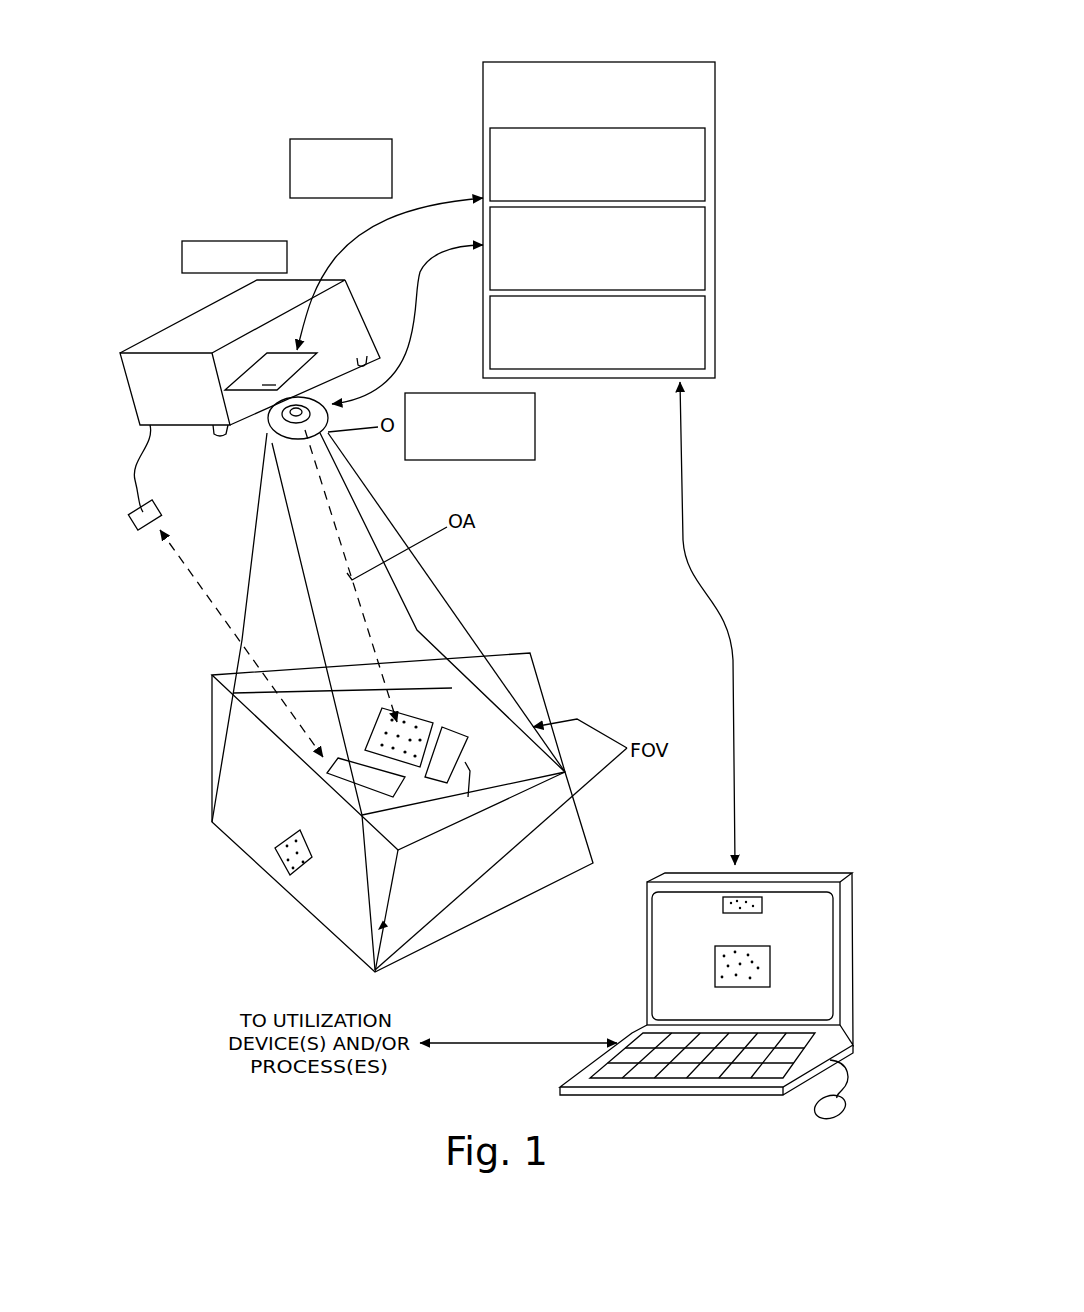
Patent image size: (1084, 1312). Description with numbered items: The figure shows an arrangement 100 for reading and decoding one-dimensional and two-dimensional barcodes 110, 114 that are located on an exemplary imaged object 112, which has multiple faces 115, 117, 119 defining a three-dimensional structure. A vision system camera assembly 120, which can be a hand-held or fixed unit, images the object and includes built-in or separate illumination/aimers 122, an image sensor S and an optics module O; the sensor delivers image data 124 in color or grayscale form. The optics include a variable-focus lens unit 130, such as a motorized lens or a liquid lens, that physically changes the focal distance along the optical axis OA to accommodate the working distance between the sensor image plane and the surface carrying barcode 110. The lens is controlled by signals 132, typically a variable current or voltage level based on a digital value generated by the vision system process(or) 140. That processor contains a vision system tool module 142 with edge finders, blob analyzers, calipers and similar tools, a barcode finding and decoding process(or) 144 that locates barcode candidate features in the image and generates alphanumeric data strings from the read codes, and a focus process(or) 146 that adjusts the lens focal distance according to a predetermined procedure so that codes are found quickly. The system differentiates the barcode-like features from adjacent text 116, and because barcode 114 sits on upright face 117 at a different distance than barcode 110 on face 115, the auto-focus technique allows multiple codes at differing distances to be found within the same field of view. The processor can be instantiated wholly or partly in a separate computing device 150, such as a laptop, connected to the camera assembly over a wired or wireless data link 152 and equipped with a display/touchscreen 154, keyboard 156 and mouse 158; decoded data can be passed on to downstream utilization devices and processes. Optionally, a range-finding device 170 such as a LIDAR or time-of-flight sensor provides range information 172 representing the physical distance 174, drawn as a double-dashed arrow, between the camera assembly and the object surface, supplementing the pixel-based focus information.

The arrangement 100 is at (256, 147).
The barcode 110 is at (432, 710).
The object 112 is at (551, 707).
The barcode 114 is at (290, 861).
The object face 115 is at (535, 677).
The text 116 is at (397, 792).
The upright face 117 is at (213, 776).
The face 119 is at (563, 845).
The vision system camera assembly 120 is at (127, 379).
The illumination/aimers 122 is at (374, 352).
The image data 124 is at (357, 142).
The variable-focus lens unit 130 is at (262, 437).
The signals 132 is at (537, 429).
The vision system process(or) 140 is at (676, 58).
The vision system tool module 142 is at (705, 147).
The barcode finding and decoding process(or) 144 is at (705, 238).
The focus process(or) 146 is at (705, 333).
The computing device 150 is at (737, 979).
The data link 152 is at (727, 596).
The display/touchscreen 154 is at (817, 943).
The keyboard 156 is at (783, 1052).
The mouse 158 is at (847, 1110).
The range-finding device 170 is at (135, 524).
The range information 172 is at (182, 256).
The physical distance 174 is at (242, 640).